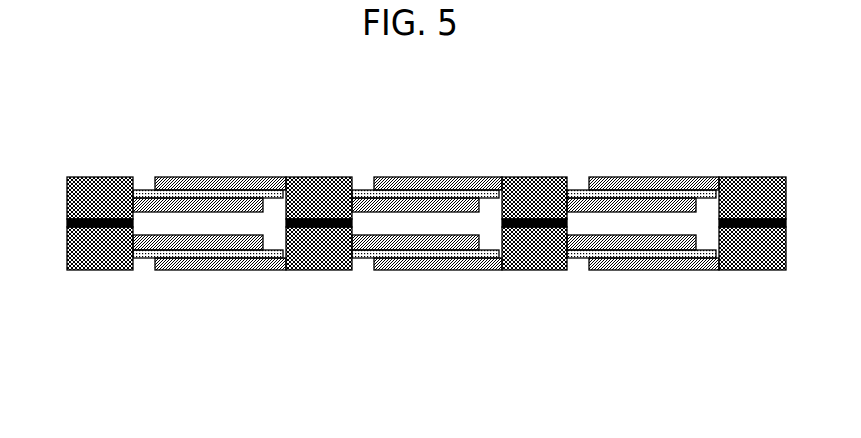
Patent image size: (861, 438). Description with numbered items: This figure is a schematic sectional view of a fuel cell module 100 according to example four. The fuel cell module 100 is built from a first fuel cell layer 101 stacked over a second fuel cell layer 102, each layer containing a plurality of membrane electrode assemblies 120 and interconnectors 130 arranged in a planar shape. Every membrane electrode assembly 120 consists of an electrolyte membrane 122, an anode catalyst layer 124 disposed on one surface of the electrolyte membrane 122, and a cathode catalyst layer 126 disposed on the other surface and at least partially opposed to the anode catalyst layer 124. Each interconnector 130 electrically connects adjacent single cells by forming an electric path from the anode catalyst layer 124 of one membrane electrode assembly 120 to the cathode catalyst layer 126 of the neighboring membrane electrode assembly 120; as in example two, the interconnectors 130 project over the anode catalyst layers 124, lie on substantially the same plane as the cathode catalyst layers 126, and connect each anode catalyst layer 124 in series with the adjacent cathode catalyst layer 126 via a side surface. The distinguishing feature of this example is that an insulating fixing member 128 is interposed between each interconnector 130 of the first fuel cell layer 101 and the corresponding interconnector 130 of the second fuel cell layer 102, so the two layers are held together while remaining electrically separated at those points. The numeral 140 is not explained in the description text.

The fuel cell module 100 is at (430, 436).
The first fuel cell layer 101 is at (63, 213).
The second fuel cell layer 102 is at (63, 270).
The membrane electrode assembly 120 is at (440, 230).
The electrolyte membrane 122 is at (240, 177).
The anode catalyst layer 124 is at (177, 177).
The cathode catalyst layer 126 is at (210, 177).
The fixing member 128 is at (350, 262).
The interconnector 130 is at (322, 262).
The cavity 140 is at (680, 177).